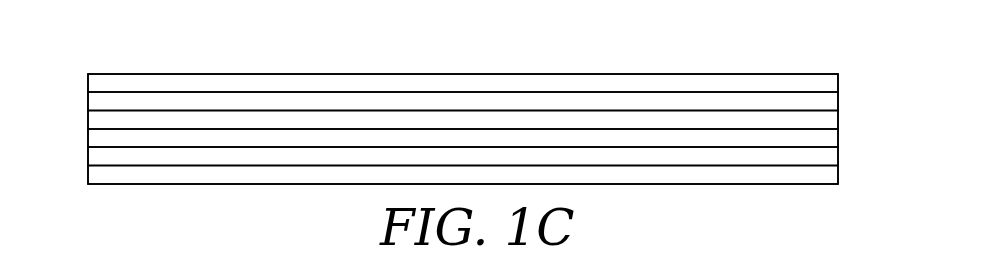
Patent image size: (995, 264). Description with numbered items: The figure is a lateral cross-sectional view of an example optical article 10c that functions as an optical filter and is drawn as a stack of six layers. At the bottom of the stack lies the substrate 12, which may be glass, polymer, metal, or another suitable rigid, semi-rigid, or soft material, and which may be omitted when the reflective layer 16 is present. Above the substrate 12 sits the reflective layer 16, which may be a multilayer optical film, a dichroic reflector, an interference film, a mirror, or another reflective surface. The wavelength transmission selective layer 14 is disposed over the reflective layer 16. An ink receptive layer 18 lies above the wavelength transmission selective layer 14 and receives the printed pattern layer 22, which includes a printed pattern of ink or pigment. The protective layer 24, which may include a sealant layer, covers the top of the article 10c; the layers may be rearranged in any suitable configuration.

The article 10c is at (118, 64).
The protective layer 24 is at (838, 74).
The printed pattern layer 22 is at (838, 100).
The ink receptive layer 18 is at (838, 117).
The wavelength transmission selective layer 14 is at (838, 133).
The reflective layer 16 is at (838, 160).
The substrate 12 is at (838, 184).